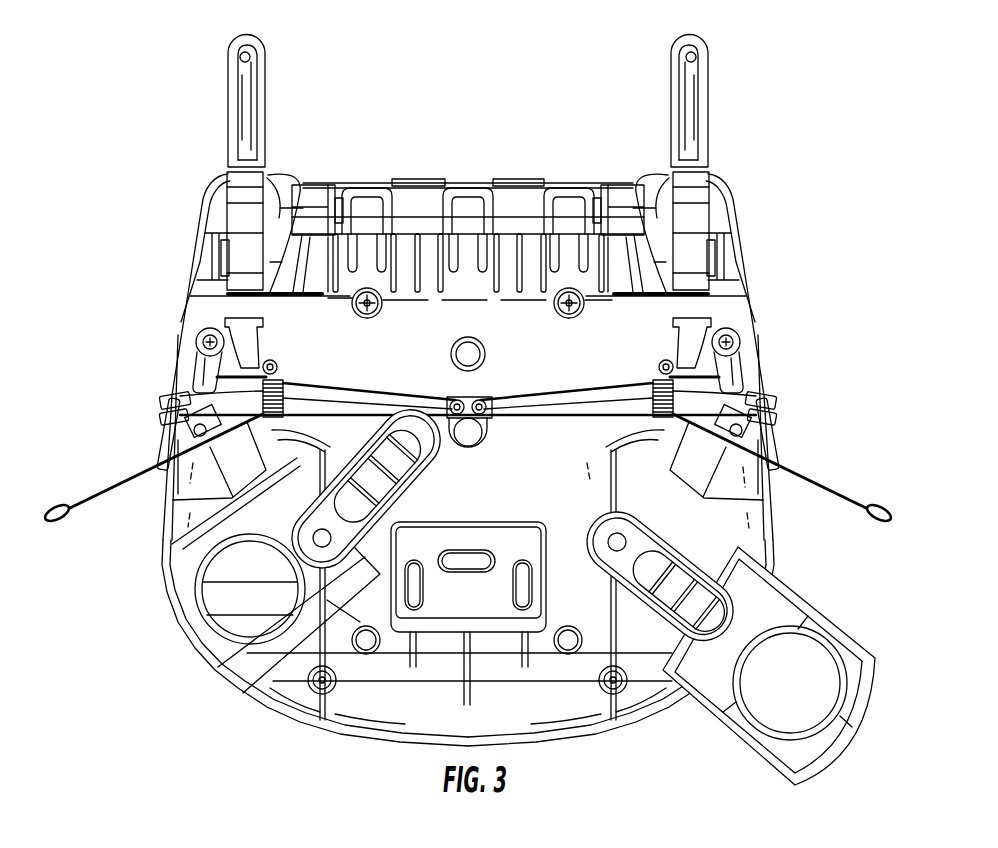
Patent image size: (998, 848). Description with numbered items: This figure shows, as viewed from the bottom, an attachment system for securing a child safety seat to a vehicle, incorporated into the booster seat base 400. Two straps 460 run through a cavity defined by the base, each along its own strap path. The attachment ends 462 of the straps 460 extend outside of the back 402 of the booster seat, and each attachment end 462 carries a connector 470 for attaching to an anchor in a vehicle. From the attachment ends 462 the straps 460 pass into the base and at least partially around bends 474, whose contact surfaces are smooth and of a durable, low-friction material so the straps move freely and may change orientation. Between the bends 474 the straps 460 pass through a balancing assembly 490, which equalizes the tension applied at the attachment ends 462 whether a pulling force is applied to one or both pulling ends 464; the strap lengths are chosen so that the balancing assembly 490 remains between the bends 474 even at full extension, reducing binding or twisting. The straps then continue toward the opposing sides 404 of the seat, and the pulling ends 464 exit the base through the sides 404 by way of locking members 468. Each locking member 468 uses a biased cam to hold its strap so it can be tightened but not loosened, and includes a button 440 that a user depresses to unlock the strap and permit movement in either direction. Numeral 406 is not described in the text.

The booster seat base 400 is at (892, 214).
The back 402 is at (463, 180).
The opposing sides 404 is at (188, 311).
The base 406 is at (588, 736).
The button 440 is at (163, 397).
The strap 460 is at (340, 393).
The attachment end 462 is at (240, 233).
The pulling end 464 is at (102, 490).
The locking member 468 is at (163, 435).
The connector 470 is at (248, 93).
The bend 474 is at (273, 361).
The balancing assembly 490 is at (477, 400).